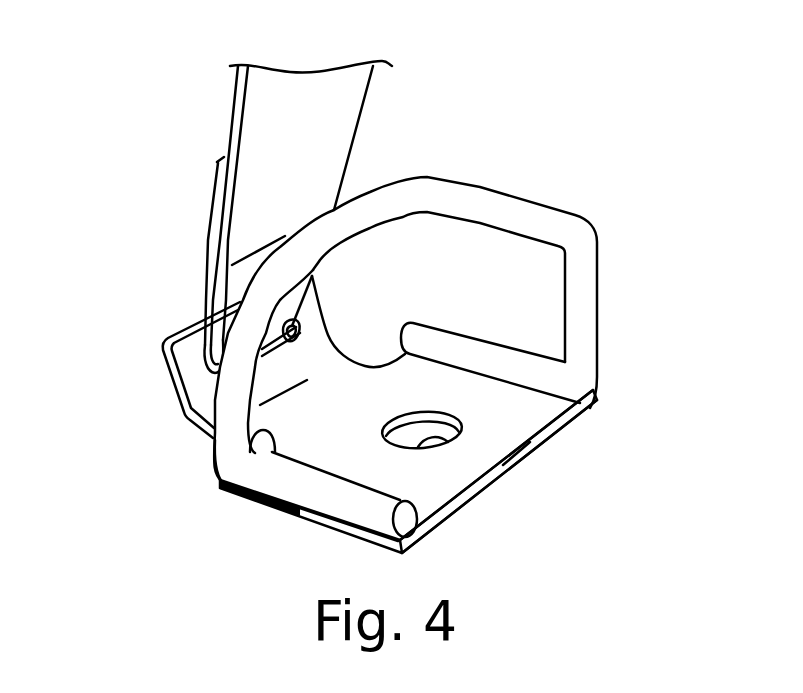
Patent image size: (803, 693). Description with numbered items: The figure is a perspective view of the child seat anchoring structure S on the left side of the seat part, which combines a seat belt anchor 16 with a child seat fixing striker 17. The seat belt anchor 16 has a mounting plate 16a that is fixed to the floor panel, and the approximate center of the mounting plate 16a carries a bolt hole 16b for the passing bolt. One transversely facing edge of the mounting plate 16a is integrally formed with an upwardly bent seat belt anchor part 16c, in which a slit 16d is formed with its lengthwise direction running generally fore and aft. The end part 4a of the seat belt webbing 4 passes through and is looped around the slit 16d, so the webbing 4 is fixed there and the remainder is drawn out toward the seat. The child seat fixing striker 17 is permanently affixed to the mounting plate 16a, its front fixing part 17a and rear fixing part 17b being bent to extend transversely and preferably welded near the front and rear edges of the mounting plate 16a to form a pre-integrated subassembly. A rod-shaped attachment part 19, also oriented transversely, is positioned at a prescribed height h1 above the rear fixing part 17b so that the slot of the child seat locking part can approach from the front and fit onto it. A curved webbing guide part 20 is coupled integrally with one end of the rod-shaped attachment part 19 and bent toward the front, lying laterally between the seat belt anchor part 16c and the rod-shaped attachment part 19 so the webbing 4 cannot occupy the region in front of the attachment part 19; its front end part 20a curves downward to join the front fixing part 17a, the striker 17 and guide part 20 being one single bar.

The seat belt webbing 4 is at (252, 110).
The end part of the seat belt webbing 4a is at (197, 296).
The seat belt anchor 16 is at (438, 530).
The mounting plate 16a is at (507, 429).
The bolt hole 16b is at (458, 443).
The seat belt anchor part 16c is at (164, 372).
The slit 16d is at (296, 327).
The child seat fixing striker 17 is at (605, 291).
The front fixing part 17a is at (322, 493).
The rear fixing part 17b is at (490, 347).
The rod-shaped attachment part 19 is at (520, 202).
The curved webbing guide part 20 is at (370, 190).
The front end part of the webbing guide part 20a is at (232, 395).
The child seat anchoring structure S is at (634, 143).
The prescribed height h1 is at (608, 242).